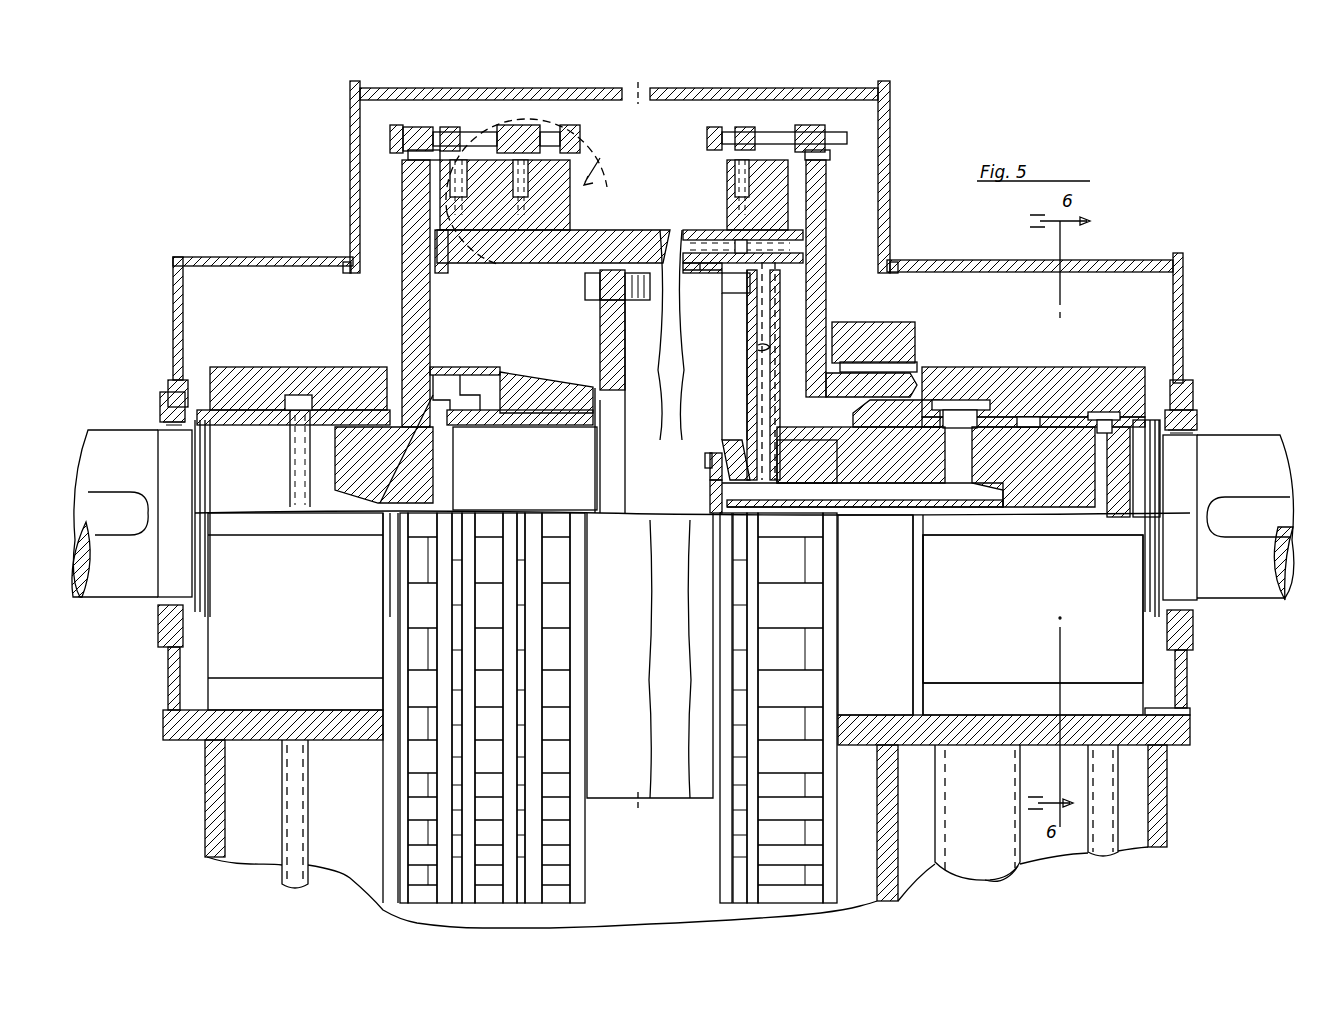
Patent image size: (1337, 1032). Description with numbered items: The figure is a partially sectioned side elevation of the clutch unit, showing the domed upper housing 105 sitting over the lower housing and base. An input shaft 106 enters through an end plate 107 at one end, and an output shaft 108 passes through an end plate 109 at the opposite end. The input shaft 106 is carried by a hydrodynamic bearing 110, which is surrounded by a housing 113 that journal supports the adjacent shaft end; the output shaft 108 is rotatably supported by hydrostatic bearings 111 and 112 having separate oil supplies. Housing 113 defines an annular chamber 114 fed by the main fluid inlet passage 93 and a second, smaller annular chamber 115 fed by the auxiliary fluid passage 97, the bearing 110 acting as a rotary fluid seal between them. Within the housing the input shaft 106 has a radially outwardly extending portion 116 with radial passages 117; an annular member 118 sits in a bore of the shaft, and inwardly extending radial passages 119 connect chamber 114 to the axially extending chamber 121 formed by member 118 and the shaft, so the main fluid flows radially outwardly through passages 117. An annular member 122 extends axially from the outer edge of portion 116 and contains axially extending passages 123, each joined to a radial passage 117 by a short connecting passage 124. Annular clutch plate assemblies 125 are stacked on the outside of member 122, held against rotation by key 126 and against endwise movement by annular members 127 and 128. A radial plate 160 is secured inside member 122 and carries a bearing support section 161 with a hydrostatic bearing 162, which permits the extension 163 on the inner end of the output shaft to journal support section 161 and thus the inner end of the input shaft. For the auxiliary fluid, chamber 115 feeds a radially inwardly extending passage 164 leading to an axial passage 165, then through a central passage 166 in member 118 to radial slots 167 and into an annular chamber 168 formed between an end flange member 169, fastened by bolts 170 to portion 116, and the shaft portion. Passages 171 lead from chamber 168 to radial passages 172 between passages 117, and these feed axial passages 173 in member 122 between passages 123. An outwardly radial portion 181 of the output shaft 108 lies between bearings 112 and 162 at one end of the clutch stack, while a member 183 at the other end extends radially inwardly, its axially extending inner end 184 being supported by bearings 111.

The domed upper housing 105 is at (848, 95).
The input shaft 106 is at (1265, 445).
The end plate 107 is at (1185, 335).
The output shaft 108 is at (118, 440).
The end plate 109 is at (178, 312).
The hydrodynamic bearing 110 is at (1032, 402).
The hydrostatic bearing 111 is at (912, 363).
The hydrostatic bearing 112 is at (263, 395).
The housing 113 is at (1060, 380).
The annular chamber 114 is at (958, 400).
The annular chamber 115 is at (1105, 415).
The radially outwardly extending portion 116 is at (810, 320).
The radial passages 117 is at (762, 328).
The annular member 118 is at (885, 483).
The radial passages 119 is at (972, 455).
The axially extending chamber 121 is at (825, 485).
The annular member 122 is at (628, 240).
The axially extending passages 123 is at (710, 262).
The connecting passage 124 is at (826, 212).
The annular clutch plate assemblies 125 is at (578, 200).
The key 126 is at (605, 230).
The annular member 127 is at (400, 205).
The annular member 128 is at (800, 185).
The radial plate 160 is at (605, 336).
The bearing support section 161 is at (555, 477).
The hydrostatic bearing 162 is at (555, 410).
The extension 163 is at (886, 515).
The radially inwardly extending passage 164 is at (1165, 432).
The axial passage 165 is at (1053, 515).
The central passage 166 is at (943, 515).
The radial slots 167 is at (705, 515).
The annular chamber 168 is at (710, 488).
The end flange member 169 is at (712, 470).
The bolts 170 is at (705, 460).
The passages 171 is at (735, 440).
The radial passages 172 is at (758, 348).
The axial passages 173 is at (700, 230).
The outwardly radial portion 181 is at (410, 300).
The member 183 is at (805, 250).
The inner end 184 is at (858, 405).
The main fluid inlet passage 93 is at (1018, 880).
The auxiliary fluid passage 97 is at (1105, 858).